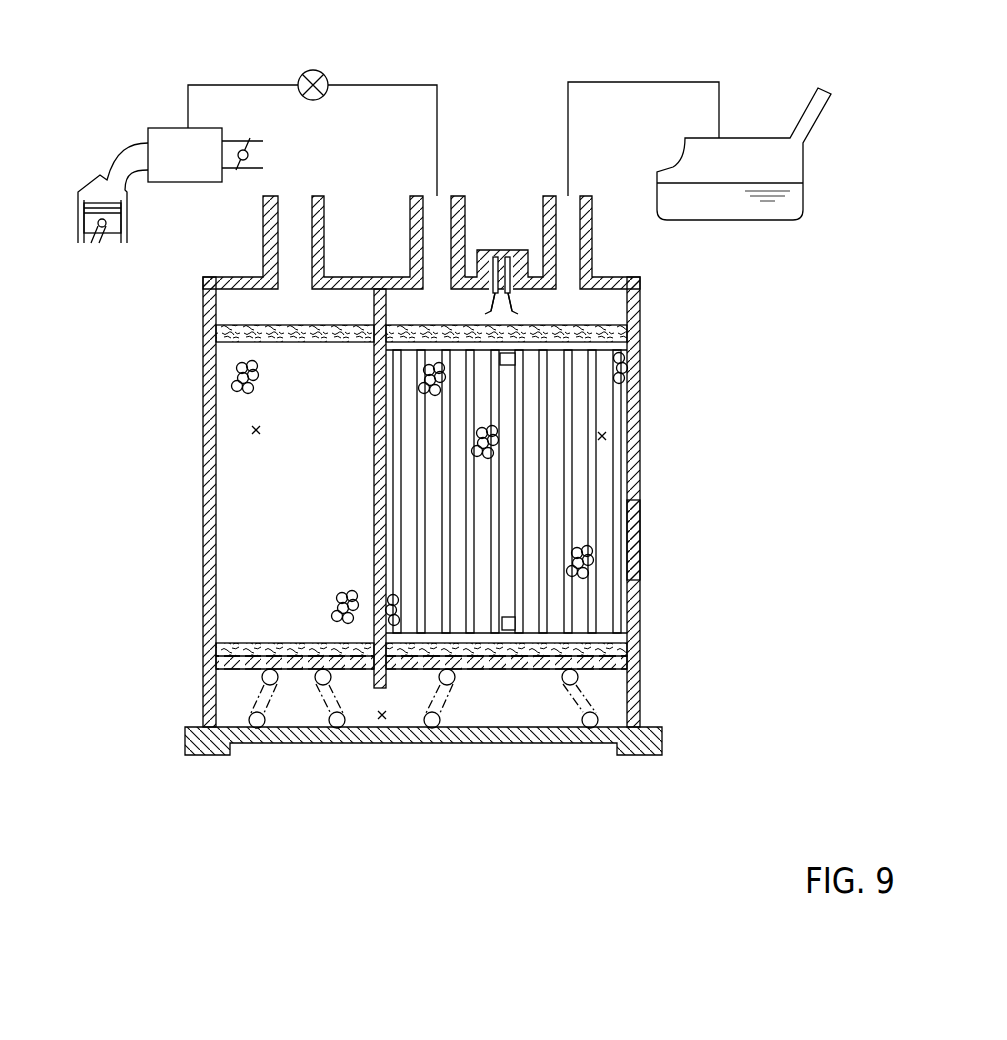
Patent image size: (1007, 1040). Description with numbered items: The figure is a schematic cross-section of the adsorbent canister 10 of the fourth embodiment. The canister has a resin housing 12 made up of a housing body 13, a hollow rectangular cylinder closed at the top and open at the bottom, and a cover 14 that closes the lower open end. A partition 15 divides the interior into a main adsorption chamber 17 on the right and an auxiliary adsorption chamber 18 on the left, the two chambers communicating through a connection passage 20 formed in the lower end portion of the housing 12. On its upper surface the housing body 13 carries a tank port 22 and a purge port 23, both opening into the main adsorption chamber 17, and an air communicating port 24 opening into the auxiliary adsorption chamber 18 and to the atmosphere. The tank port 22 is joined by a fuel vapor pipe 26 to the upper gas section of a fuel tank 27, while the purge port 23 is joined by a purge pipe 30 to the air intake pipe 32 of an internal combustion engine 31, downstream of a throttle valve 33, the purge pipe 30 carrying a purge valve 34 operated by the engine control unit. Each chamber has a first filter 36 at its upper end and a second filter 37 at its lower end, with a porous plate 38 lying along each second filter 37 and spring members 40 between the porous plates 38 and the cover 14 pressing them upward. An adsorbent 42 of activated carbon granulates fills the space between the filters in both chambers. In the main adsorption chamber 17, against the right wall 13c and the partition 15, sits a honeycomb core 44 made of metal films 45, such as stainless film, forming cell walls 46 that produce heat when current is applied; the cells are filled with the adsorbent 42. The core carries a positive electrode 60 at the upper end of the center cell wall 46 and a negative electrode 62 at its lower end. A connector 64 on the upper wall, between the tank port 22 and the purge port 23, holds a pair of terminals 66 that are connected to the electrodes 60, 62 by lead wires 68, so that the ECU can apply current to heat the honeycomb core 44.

The adsorbent canister 10 is at (474, 461).
The housing 12 is at (474, 461).
The housing body 13 is at (641, 392).
The right wall 13c is at (633, 527).
The cover 14 is at (492, 745).
The partition 15 is at (378, 440).
The main adsorption chamber 17 is at (606, 436).
The auxiliary adsorption chamber 18 is at (250, 430).
The connection passage 20 is at (382, 722).
The tank port 22 is at (572, 232).
The purge port 23 is at (437, 222).
The air communicating port 24 is at (287, 238).
The fuel vapor pipe 26 is at (655, 82).
The fuel tank 27 is at (752, 137).
The purge pipe 30 is at (412, 82).
The internal combustion engine 31 is at (85, 183).
The air intake pipe 32 is at (165, 128).
The throttle valve 33 is at (252, 147).
The purge valve 34 is at (315, 70).
The first filter 36 is at (216, 328).
The second filter 37 is at (216, 648).
The porous plate 38 is at (216, 668).
The spring member 40 is at (257, 728).
The adsorbent 42 is at (233, 368).
The honeycomb core 44 is at (608, 590).
The metal film 45 is at (512, 478).
The cell wall 46 is at (568, 491).
The electrode 60 is at (500, 356).
The electrode 62 is at (512, 630).
The connector 64 is at (522, 250).
The terminal 66 is at (493, 258).
The lead wire 68 is at (493, 308).